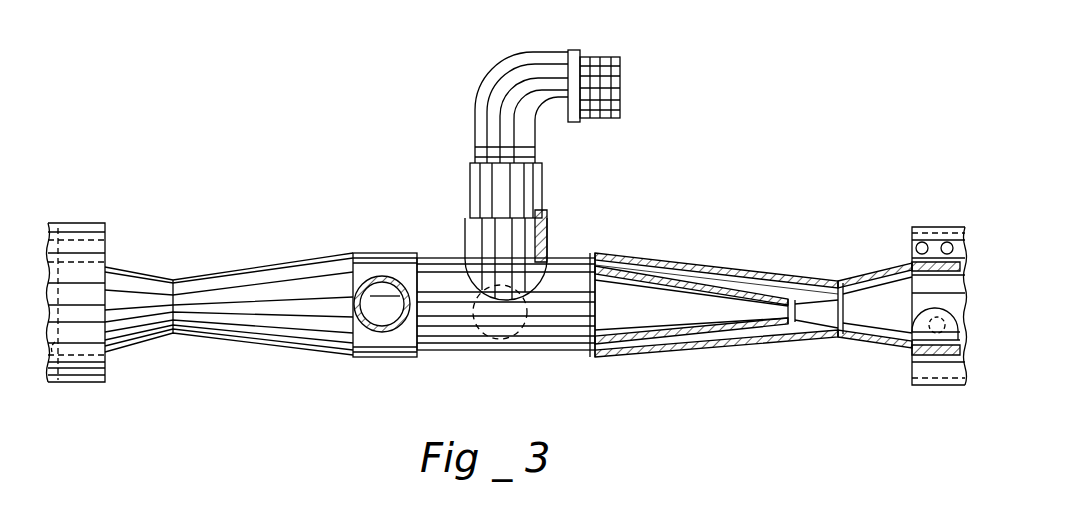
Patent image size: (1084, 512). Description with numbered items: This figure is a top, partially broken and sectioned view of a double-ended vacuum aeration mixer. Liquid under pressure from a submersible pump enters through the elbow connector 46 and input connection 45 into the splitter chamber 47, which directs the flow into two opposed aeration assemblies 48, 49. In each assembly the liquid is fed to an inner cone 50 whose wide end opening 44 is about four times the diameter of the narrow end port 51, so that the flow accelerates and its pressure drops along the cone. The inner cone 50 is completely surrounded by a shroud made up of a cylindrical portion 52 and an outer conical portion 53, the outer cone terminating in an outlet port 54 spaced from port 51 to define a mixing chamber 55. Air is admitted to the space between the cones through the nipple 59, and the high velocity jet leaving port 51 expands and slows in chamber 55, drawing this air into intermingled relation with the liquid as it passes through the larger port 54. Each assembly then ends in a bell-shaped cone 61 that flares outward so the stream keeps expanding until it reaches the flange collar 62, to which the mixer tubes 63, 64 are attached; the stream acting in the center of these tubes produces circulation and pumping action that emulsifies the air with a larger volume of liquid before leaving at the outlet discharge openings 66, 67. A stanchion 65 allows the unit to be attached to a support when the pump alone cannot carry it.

The wide end opening 44 is at (578, 352).
The input connection 45 is at (472, 184).
The elbow connector 46 is at (498, 72).
The splitter chamber 47 is at (556, 267).
The aeration assembly 48 is at (196, 248).
The aeration assembly 49 is at (720, 223).
The inner cone 50 is at (686, 266).
The narrow end port 51 is at (789, 298).
The cylindrical portion 52 is at (638, 358).
The outer conical portion 53 is at (727, 346).
The outlet port 54 is at (837, 298).
The mixing chamber 55 is at (826, 320).
The nipple 59 is at (383, 332).
The bell-shaped cone 61 is at (868, 274).
The flange collar 62 is at (914, 348).
The mixer tube 63 is at (108, 180).
The mixer tube 64 is at (925, 227).
The stanchion 65 is at (484, 350).
The outlet discharge opening 66 is at (913, 330).
The outlet discharge opening 67 is at (55, 352).